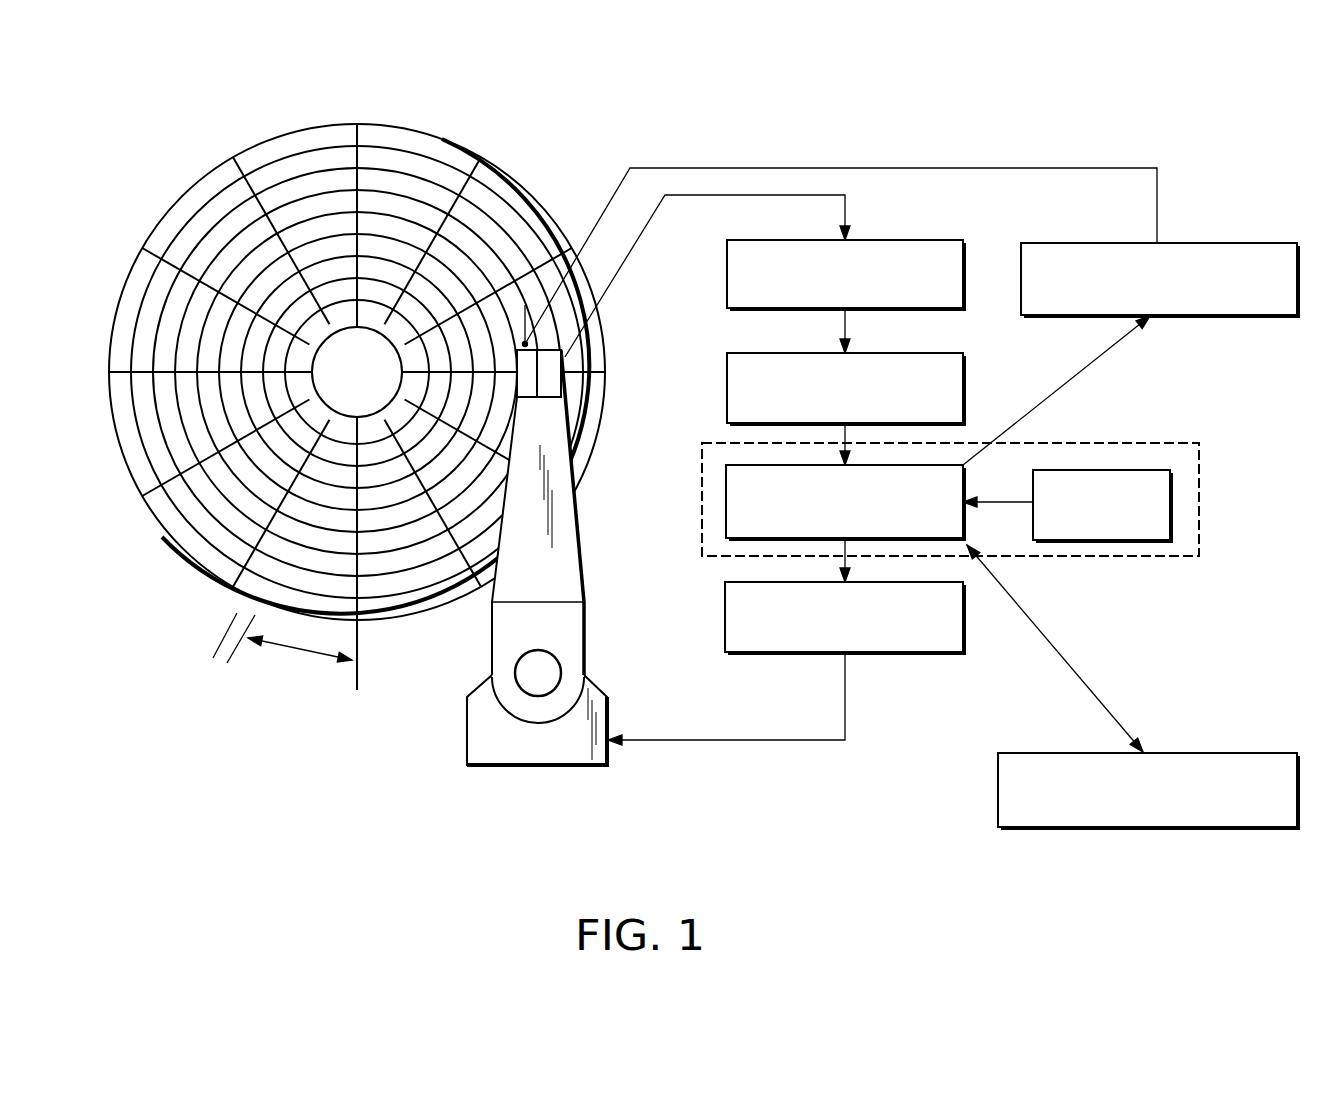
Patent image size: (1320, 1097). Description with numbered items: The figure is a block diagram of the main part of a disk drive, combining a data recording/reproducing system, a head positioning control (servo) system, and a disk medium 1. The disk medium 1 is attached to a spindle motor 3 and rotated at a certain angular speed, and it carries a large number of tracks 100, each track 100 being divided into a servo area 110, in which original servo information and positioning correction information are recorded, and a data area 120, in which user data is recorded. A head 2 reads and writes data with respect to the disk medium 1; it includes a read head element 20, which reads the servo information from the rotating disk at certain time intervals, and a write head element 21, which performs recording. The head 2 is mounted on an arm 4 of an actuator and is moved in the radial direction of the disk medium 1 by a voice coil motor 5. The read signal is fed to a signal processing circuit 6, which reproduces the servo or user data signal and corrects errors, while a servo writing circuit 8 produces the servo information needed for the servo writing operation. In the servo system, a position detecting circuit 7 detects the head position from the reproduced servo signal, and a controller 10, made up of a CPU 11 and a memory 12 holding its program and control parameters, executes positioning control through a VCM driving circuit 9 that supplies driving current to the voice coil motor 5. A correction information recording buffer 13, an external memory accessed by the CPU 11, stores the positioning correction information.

The disk medium 1 is at (217, 165).
The head 2 is at (565, 390).
The spindle motor 3 is at (187, 540).
The arm 4 is at (490, 648).
The voice coil motor 5 is at (528, 768).
The signal processing circuit 6 is at (880, 240).
The position detecting circuit 7 is at (880, 353).
The servo writing circuit 8 is at (1262, 243).
The VCM driving circuit 9 is at (890, 652).
The controller 10 is at (1125, 443).
The CPU 11 is at (935, 541).
The memory 12 is at (1170, 507).
The correction information recording buffer 13 is at (1258, 753).
The read head element 20 is at (570, 357).
The write head element 21 is at (538, 330).
The track 100 is at (140, 445).
The servo area 110 is at (223, 657).
The data area 120 is at (293, 648).